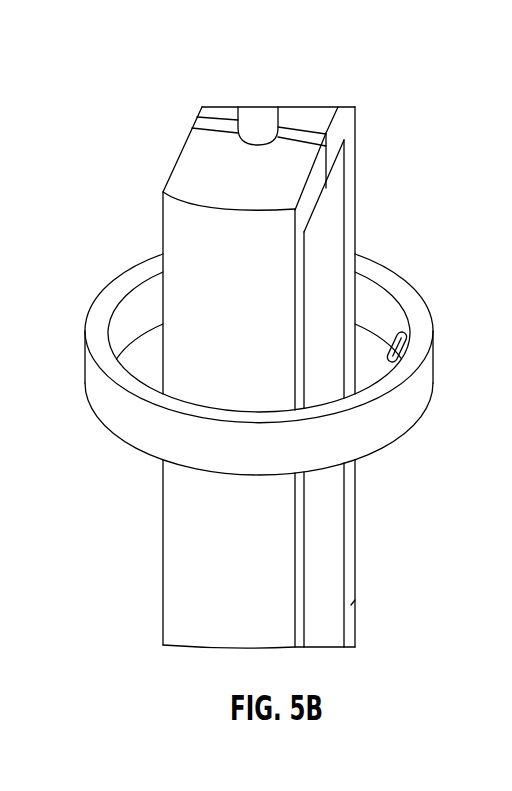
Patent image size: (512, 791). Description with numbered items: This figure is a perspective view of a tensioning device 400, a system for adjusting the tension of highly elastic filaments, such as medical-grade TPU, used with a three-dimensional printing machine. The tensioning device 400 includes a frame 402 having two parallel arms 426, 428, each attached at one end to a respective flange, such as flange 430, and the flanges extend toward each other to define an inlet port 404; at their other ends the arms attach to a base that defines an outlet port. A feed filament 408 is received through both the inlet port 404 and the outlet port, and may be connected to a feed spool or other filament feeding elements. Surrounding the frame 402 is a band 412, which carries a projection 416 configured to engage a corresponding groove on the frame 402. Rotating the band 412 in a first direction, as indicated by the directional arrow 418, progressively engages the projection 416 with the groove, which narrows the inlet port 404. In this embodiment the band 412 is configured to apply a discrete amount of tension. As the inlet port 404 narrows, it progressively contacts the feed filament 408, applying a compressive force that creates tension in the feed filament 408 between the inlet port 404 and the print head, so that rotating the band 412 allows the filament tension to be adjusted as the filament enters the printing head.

The tensioning device 400 is at (102, 492).
The frame 402 is at (367, 192).
The inlet port 404 is at (289, 123).
The feed filament 408 is at (230, 97).
The band 412 is at (400, 410).
The projection 416 is at (400, 343).
The directional arrow 418 is at (63, 293).
The arm 426 is at (187, 558).
The arm 428 is at (351, 607).
The flange 430 is at (190, 166).